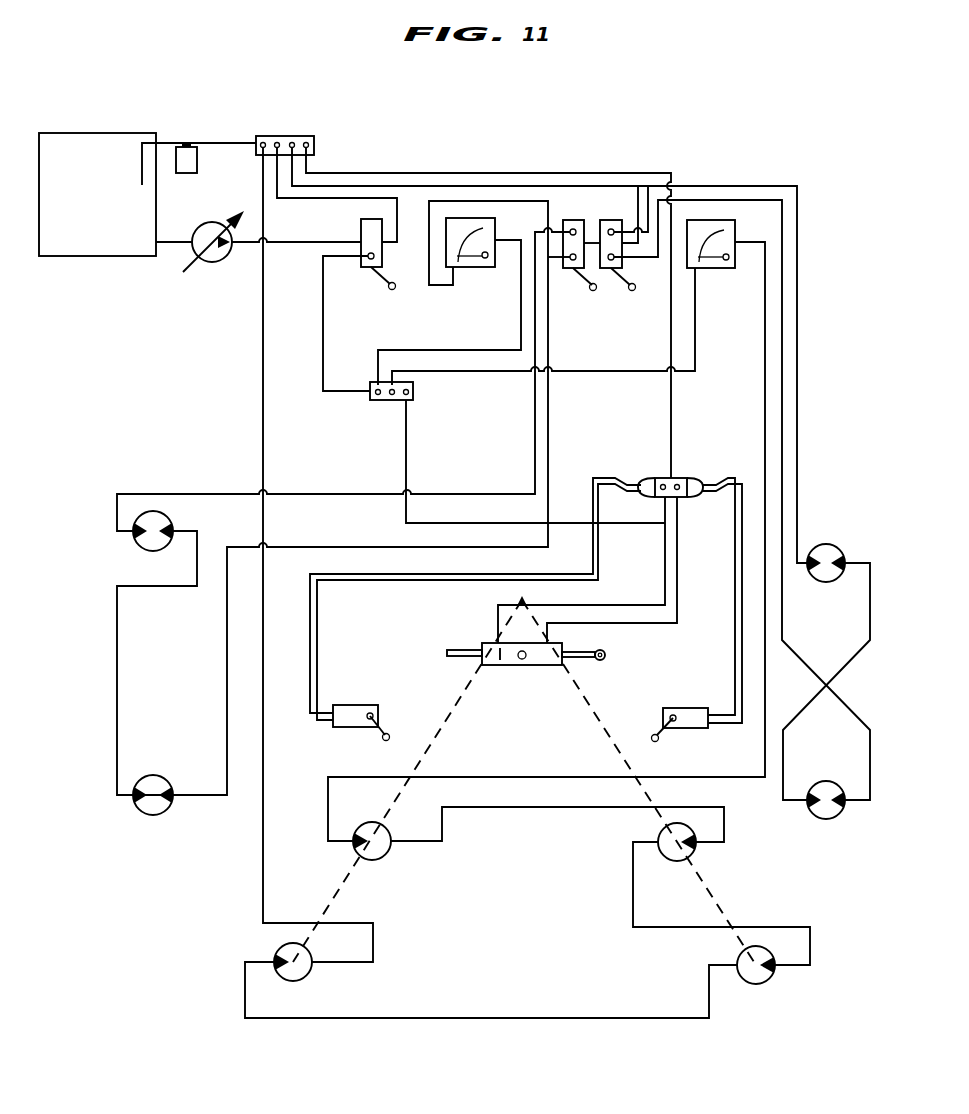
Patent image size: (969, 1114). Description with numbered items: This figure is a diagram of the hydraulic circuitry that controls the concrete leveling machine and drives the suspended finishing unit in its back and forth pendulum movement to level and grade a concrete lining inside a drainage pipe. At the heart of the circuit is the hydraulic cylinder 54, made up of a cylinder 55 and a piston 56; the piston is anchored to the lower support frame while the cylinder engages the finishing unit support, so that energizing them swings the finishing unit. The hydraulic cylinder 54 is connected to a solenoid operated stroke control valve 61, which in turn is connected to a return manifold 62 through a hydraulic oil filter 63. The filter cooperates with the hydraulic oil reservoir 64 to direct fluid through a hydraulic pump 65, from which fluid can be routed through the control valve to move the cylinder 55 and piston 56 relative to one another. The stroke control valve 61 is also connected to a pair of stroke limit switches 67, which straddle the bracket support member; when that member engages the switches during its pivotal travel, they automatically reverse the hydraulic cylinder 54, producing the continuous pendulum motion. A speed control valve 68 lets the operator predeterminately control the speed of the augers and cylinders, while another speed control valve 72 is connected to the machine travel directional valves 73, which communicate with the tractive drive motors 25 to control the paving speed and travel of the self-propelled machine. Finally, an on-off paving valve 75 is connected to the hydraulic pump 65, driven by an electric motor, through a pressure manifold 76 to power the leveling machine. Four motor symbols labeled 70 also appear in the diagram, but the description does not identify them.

The tractive drive motors 25 is at (168, 546).
The hydraulic cylinder 54 is at (540, 666).
The cylinder 55 is at (498, 660).
The piston 56 is at (458, 650).
The solenoid operated stroke control valve 61 is at (687, 478).
The return manifold 62 is at (312, 136).
The hydraulic oil filter 63 is at (197, 160).
The hydraulic oil reservoir 64 is at (110, 209).
The hydraulic pump 65 is at (224, 262).
The stroke limit switches 67 is at (387, 730).
The speed control valve 68 is at (710, 268).
The hydraulic motor 70 is at (378, 860).
The speed control valve 72 is at (478, 267).
The machine travel directional valves 73 is at (612, 220).
The on-off paving valve 75 is at (365, 262).
The pressure manifold 76 is at (385, 402).